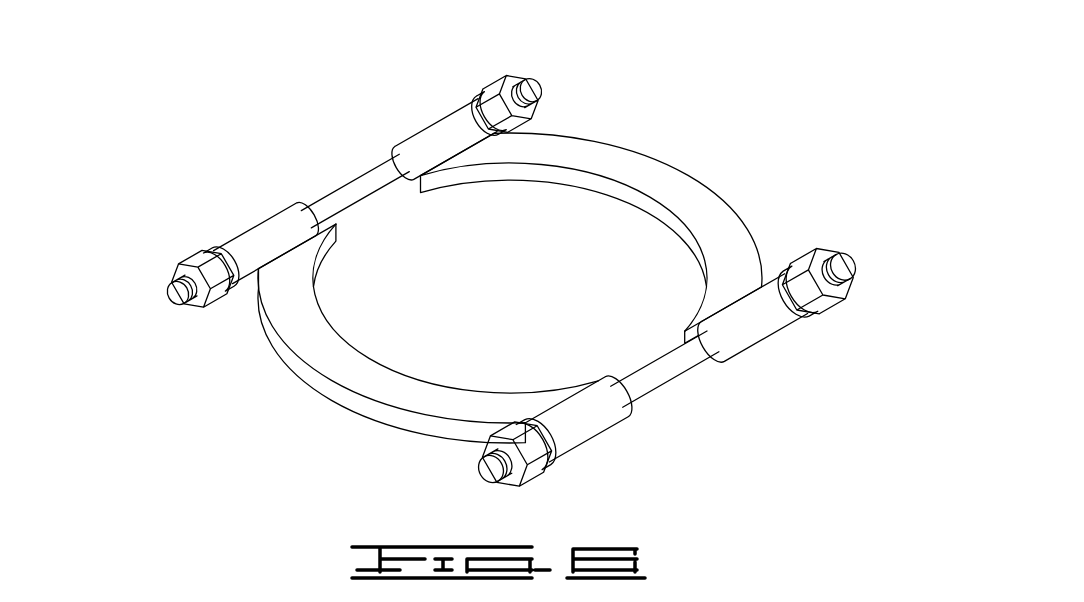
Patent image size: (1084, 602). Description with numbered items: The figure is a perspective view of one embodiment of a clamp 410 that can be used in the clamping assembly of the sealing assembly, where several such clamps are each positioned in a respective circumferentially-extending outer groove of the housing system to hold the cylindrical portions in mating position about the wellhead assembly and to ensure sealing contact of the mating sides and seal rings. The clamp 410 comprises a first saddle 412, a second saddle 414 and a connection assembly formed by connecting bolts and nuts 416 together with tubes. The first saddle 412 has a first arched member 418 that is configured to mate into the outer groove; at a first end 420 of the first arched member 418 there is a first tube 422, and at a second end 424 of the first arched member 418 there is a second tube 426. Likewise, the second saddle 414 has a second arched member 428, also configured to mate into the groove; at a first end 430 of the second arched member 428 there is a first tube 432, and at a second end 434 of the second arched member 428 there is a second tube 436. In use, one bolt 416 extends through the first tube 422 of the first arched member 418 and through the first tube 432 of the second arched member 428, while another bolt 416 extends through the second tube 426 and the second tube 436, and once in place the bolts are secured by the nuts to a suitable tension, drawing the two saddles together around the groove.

The clamp 410 is at (196, 58).
The first saddle 412 is at (733, 169).
The second saddle 414 is at (342, 441).
The connecting bolts and nuts 416 is at (197, 312).
The first arched member 418 is at (592, 138).
The first end of first arched member 420 is at (438, 137).
The first tube 422 is at (451, 103).
The second end of first arched member 424 is at (750, 349).
The second tube 426 is at (790, 325).
The second arched member 428 is at (267, 341).
The first end of second arched member 430 is at (293, 242).
The first tube 432 is at (233, 238).
The second end of second arched member 434 is at (571, 402).
The second tube 436 is at (558, 457).